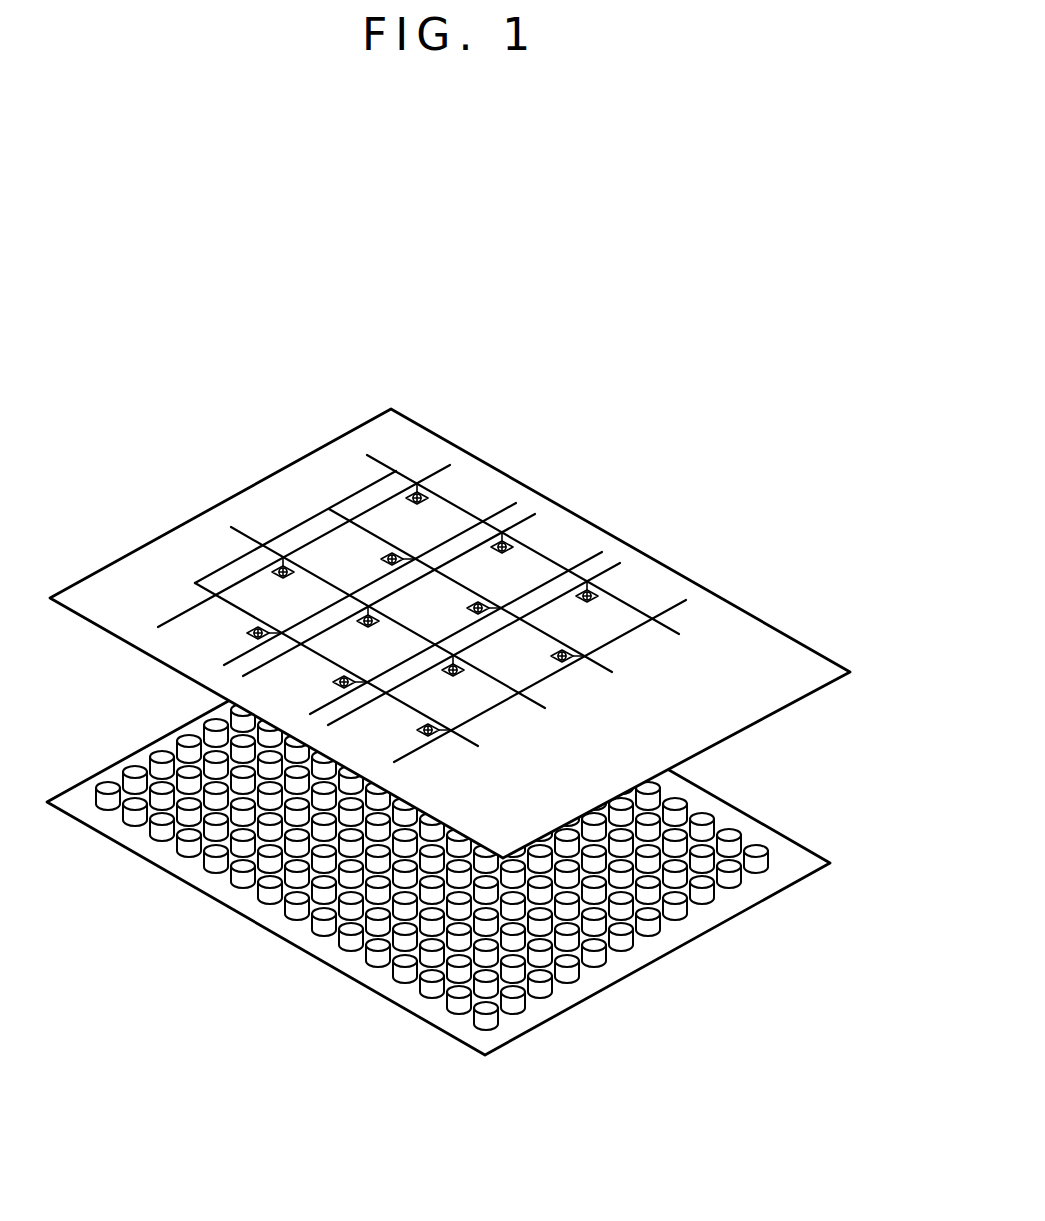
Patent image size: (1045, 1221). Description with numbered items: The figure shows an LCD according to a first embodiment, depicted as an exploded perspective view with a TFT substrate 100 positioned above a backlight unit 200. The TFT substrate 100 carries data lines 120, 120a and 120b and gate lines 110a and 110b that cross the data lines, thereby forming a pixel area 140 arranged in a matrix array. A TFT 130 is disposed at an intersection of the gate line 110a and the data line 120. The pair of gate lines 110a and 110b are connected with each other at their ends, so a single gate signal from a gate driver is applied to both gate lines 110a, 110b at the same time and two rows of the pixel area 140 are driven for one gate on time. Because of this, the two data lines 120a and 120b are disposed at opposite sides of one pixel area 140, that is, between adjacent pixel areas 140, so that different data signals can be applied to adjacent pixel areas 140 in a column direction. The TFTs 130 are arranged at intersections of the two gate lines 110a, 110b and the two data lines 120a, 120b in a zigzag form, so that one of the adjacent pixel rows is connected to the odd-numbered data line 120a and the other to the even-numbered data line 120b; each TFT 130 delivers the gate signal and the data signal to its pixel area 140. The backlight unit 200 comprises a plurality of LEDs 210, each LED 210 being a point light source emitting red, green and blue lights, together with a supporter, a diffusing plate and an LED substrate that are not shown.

The TFT substrate 100 is at (806, 442).
The gate line 110a is at (372, 458).
The gate line 110b is at (328, 508).
The data line 120 is at (583, 566).
The data line 120a is at (448, 465).
The data line 120b is at (499, 520).
The TFT 130 is at (594, 590).
The pixel area 140 is at (256, 592).
The backlight unit 200 is at (350, 982).
The LED 210 is at (147, 838).